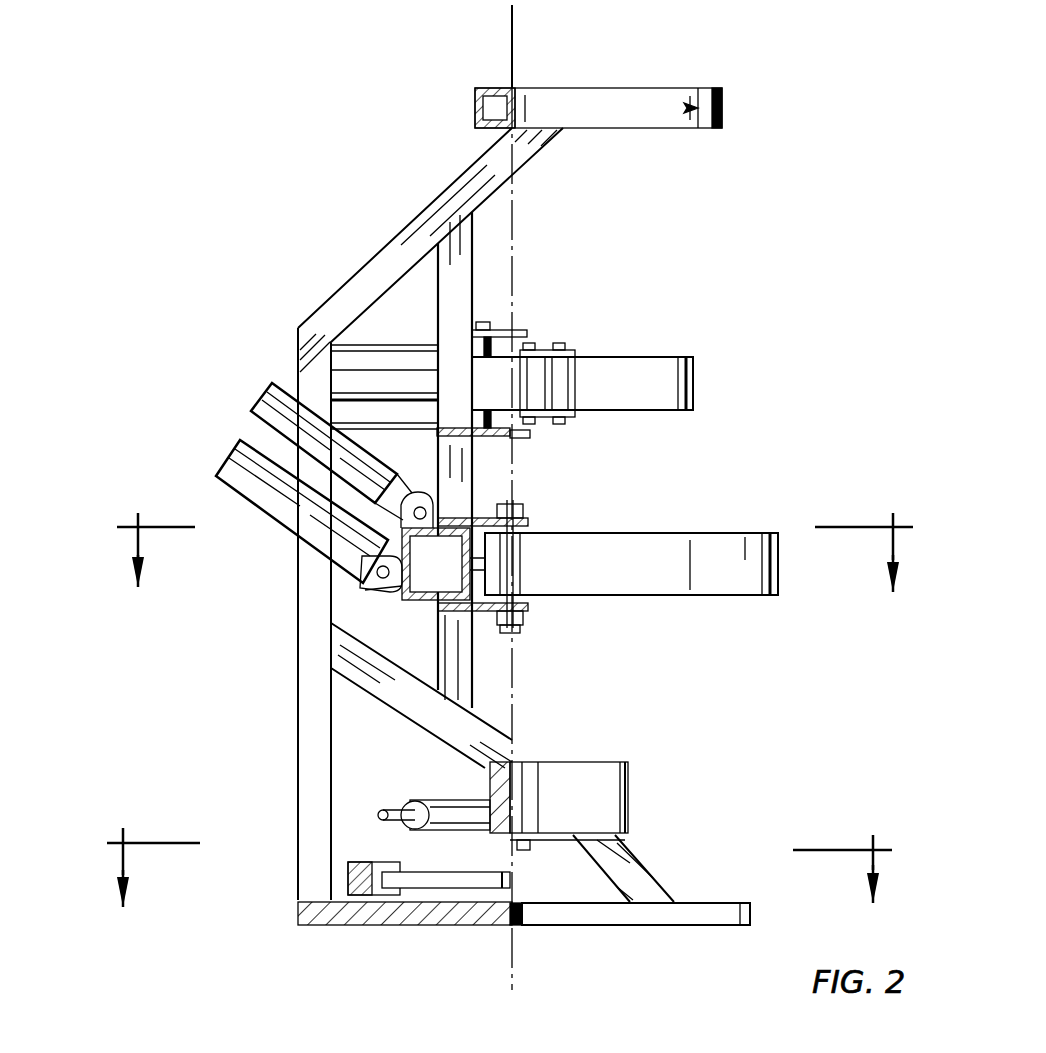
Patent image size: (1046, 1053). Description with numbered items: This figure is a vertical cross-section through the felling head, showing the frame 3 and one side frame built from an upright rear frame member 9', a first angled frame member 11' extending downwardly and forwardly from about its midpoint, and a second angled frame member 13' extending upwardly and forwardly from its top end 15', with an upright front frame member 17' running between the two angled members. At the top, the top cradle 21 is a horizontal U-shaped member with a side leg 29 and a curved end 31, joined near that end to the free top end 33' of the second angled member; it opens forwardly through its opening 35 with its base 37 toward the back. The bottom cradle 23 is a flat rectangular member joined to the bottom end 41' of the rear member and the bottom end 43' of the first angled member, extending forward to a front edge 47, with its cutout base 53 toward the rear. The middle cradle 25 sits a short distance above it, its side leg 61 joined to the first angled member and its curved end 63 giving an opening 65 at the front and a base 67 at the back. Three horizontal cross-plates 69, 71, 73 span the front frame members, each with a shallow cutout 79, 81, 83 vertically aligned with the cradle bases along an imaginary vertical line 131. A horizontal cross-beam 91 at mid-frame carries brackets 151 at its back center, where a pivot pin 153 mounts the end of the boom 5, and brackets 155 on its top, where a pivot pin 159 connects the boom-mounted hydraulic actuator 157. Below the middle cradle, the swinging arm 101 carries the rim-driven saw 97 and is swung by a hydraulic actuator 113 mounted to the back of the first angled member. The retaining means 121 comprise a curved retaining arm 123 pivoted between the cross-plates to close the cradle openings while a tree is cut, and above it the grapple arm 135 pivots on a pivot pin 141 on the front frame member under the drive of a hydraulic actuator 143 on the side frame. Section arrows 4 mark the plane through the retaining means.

The imaginary vertical line 131 is at (517, 26).
The top cradle 21 is at (660, 88).
The curved end 31 is at (474, 103).
The base 37 is at (520, 103).
The opening 35 is at (728, 108).
The side leg 29 is at (690, 128).
The free top end 33' is at (568, 148).
The second angled frame member 13' is at (430, 235).
The top end 15' is at (277, 341).
The rear frame member 9' is at (285, 614).
The front frame member 17' is at (510, 460).
The hydraulic actuator 143 is at (420, 326).
The pivot pin 141 is at (498, 330).
The grapple arm 135 is at (700, 380).
The cutout 79 is at (528, 432).
The pivot pin 159 is at (378, 432).
The cross-plate 69 is at (515, 440).
The hydraulic actuator 157 is at (253, 422).
The boom 5 is at (248, 492).
The brackets 155 is at (440, 490).
The brackets 151 is at (377, 567).
The pivot pin 153 is at (395, 585).
The cross-beam 91 is at (420, 608).
The cross-plate 71 is at (505, 516).
The cutout 83 is at (532, 612).
The cutout 81 is at (528, 522).
The cross-plate 73 is at (477, 620).
The retaining means 121 is at (745, 528).
The retaining arm 123 is at (690, 597).
The first angled frame member 11' is at (421, 695).
The middle cradle 25 is at (614, 760).
The side leg 61 is at (630, 793).
The opening 65 is at (583, 818).
The base 67 is at (513, 803).
The curved end 63 is at (492, 788).
The hydraulic actuator 113 is at (432, 798).
The swinging arm 101 is at (352, 862).
The saw 97 is at (466, 890).
The bottom end 41' is at (370, 893).
The base 53 is at (528, 924).
The bottom cradle 23 is at (723, 900).
The front edge 47 is at (752, 915).
The bottom end 43' is at (655, 868).
The section line 4- 4 is at (512, 565).
The frame 3 is at (498, 877).